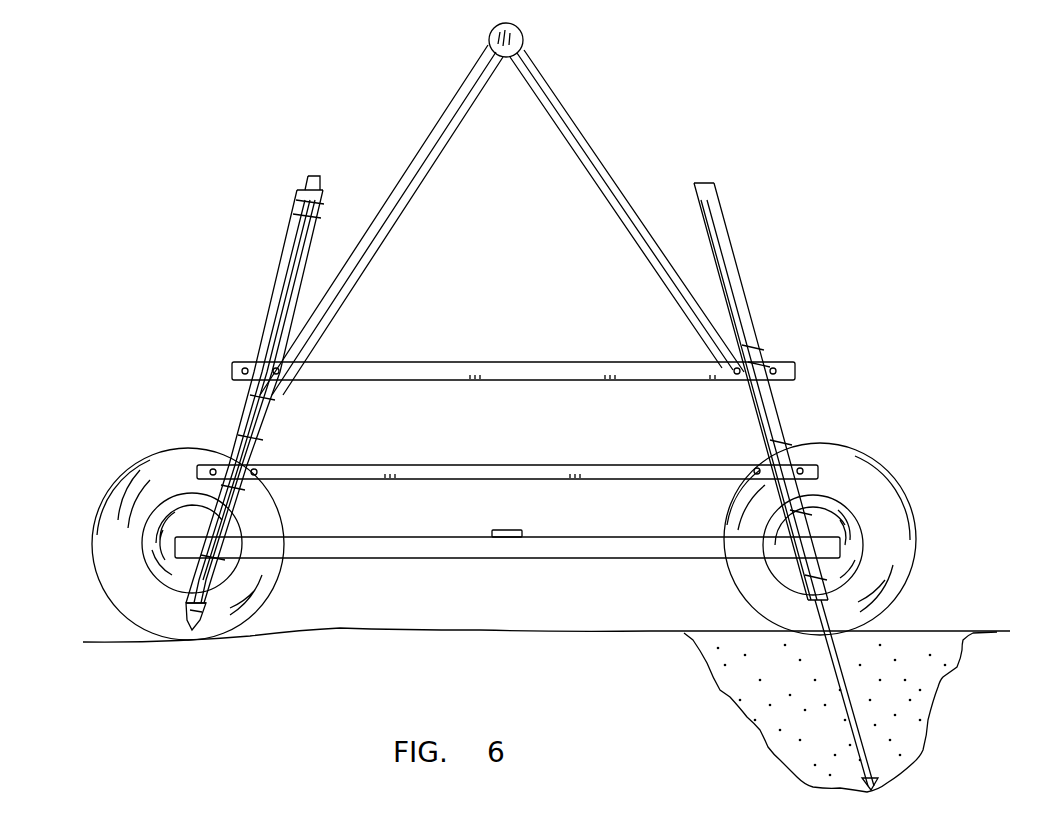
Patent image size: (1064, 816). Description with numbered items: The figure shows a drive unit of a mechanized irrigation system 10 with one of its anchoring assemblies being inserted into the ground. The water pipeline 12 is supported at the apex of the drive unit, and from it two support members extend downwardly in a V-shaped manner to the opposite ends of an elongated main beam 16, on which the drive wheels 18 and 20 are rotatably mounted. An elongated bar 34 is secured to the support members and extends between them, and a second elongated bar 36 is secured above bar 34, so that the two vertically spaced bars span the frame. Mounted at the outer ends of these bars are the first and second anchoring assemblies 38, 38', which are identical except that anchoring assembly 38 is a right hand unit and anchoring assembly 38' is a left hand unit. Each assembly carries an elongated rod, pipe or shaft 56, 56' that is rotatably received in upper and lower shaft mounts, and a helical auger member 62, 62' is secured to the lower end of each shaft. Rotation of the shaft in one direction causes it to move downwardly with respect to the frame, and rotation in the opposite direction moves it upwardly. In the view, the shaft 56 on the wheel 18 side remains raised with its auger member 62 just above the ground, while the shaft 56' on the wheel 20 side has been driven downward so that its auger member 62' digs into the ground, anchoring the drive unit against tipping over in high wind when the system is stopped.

The mechanized irrigation system 10 is at (663, 140).
The water pipeline 12 is at (525, 33).
The main beam 16 is at (423, 548).
The drive wheel 18 is at (138, 468).
The drive wheel 20 is at (858, 468).
The elongated bar 34 is at (632, 465).
The elongated bar 36 is at (537, 362).
The first anchoring assembly 38 is at (233, 389).
The second anchoring assembly 38' is at (784, 391).
The shaft 56 is at (240, 401).
The shaft 56' is at (842, 493).
The helical auger member 62 is at (242, 649).
The helical auger member 62' is at (946, 758).